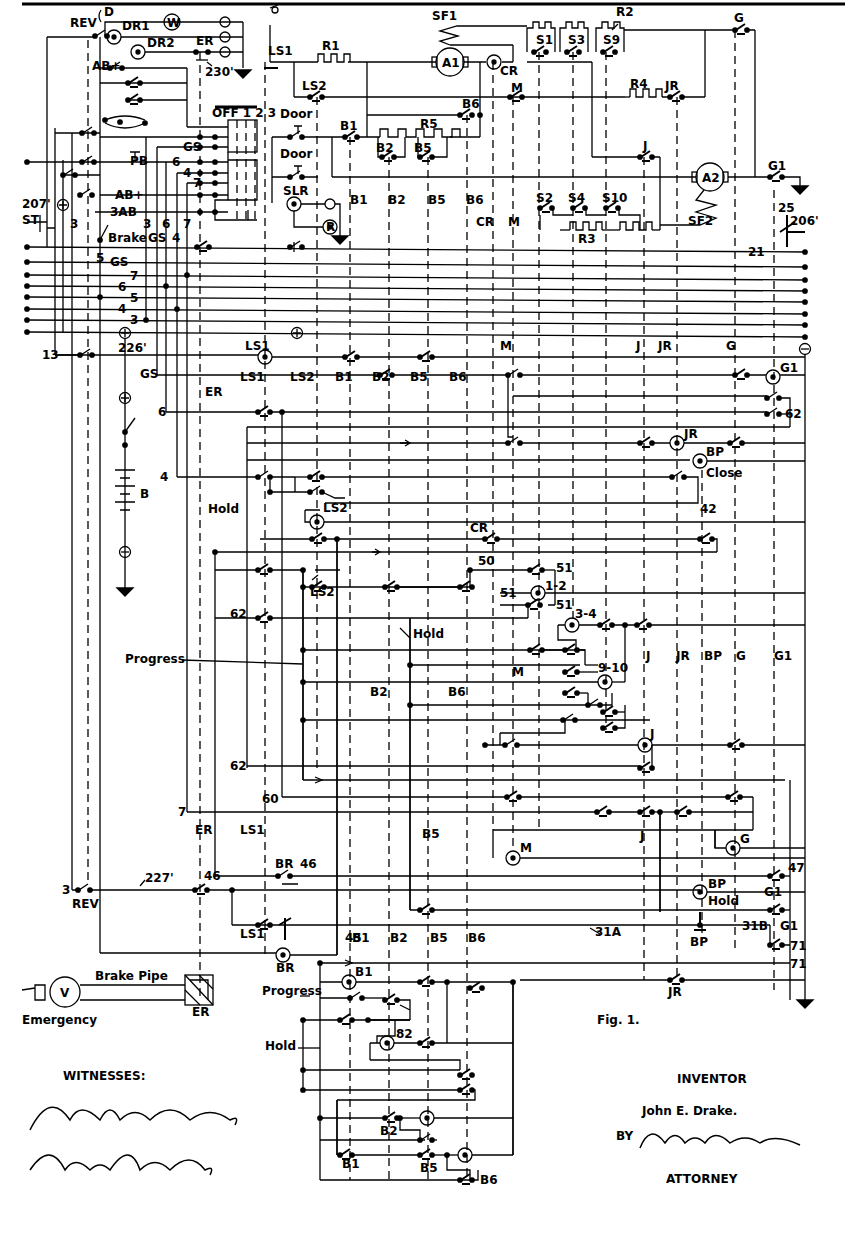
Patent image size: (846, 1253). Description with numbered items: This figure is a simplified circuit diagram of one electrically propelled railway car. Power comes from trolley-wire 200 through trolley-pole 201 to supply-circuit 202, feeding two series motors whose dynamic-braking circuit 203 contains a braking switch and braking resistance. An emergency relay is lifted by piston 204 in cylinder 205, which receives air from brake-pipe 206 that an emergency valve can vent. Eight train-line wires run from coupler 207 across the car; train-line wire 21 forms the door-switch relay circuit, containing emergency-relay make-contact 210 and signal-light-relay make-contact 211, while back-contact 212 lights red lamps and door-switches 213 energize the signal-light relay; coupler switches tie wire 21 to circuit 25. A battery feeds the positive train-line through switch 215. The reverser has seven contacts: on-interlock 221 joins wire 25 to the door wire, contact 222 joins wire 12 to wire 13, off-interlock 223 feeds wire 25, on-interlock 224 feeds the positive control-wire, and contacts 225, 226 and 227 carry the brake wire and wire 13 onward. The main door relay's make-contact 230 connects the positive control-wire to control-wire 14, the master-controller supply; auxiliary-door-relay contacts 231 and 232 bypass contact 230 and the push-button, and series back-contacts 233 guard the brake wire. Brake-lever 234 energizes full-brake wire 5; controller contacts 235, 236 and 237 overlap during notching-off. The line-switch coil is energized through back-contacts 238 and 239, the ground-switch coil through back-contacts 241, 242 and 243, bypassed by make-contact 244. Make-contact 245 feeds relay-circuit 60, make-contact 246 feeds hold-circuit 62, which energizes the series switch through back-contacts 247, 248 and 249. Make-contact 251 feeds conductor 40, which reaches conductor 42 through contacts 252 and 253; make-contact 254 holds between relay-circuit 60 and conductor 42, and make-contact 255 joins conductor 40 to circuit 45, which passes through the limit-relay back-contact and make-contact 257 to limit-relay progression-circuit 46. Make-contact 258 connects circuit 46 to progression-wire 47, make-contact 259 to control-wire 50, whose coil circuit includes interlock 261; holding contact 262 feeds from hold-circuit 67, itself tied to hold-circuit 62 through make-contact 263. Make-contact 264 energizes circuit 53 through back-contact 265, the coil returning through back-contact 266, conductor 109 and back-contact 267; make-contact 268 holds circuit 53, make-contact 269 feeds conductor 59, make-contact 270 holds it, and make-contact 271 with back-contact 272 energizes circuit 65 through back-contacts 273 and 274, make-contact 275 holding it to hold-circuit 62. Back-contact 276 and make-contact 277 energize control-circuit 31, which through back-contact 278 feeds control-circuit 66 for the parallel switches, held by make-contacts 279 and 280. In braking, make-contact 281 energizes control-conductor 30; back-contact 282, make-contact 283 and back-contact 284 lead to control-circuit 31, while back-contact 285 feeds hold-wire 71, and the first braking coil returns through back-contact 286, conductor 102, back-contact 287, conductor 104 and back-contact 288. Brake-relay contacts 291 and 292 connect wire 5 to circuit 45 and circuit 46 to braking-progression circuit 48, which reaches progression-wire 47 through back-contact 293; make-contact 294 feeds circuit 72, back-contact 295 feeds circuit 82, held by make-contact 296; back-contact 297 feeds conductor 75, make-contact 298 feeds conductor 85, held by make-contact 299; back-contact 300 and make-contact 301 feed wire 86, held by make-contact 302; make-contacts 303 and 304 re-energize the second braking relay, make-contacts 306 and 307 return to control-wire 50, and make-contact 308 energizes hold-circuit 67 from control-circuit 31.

The trolley-wire 200 is at (370, 5).
The trolley-pole 201 is at (288, 13).
The supply-circuit line 202 is at (288, 43).
The dynamic-braking circuit 203 is at (450, 172).
The piston 204 is at (192, 972).
The cylinder 205 is at (210, 972).
The brake-pipe 206 is at (128, 1002).
The coupler 207 is at (416, 342).
The make-contact of emergency-relay ER 210 is at (205, 255).
The make-contact of signal-light relay SLR 211 is at (288, 239).
The back-contact of signal-light relay SLR 212 is at (309, 240).
The door-switches 213 is at (312, 122).
The battery switch 215 is at (140, 432).
The reverser-on interlock contact 221 is at (92, 38).
The second reverser-contact 222 is at (82, 128).
The third reverser-contact 223 is at (100, 152).
The fourth reverser-contact 224 is at (95, 172).
The fifth reverser-contact 225 is at (90, 192).
The sixth reverser-contact 226 is at (80, 358).
The seventh reverser-contact 227 is at (88, 884).
The make-contact of main door-relay DR1 230 is at (140, 58).
The first make-contact of auxiliary door-relay DR2 231 is at (146, 82).
The second make-contact of auxiliary door-relay DR2 232 is at (146, 99).
The back-contact of door-relays DR1 and DR2 233 is at (105, 118).
The brake-lever 234 is at (115, 229).
The braking-circuit off-position contact 235 is at (232, 220).
The motoring-circuit on-position contact 236 is at (252, 225).
The motoring-circuit on-position contact 237 is at (215, 100).
The back-contact of braking-switch B1 238 is at (352, 350).
The back-contact of braking-switch B5 239 is at (427, 350).
The back-contact of braking-switch B2 241 is at (388, 368).
The back-contact of switch M 242 is at (520, 370).
The back-contact of switch G 243 is at (728, 368).
The make-contact of ground-switch G1 244 is at (765, 409).
The LS1 make-contact 245 is at (262, 405).
The G1 make-contact 246 is at (765, 417).
The back-contact of switch M 247 is at (516, 450).
The back-contact of switch J 248 is at (640, 448).
The back-contact of switch G 249 is at (740, 450).
The LS1 make-contact 251 is at (256, 480).
The LS2 back-contact 252 is at (318, 470).
The JR make-contact 253 is at (511, 487).
The LS2 make-contact 254 is at (336, 497).
The LS2 make-contact 255 is at (310, 541).
The BP make-contact 257 is at (713, 532).
The LS1 make-contact 258 is at (256, 573).
The LS2 make-contact 259 is at (323, 592).
The back-contact of switch 1-2 261 is at (528, 576).
The holding-circuit make-contact of switch 1-2 262 is at (528, 610).
The LS1 make-contact 263 is at (256, 622).
The make-contact of switch 1-2 264 is at (537, 644).
The back-contact of switch 3-4 265 is at (565, 655).
The back-contact of switch 9-10 266 is at (606, 618).
The J-switch back-contact 267 is at (645, 618).
The make-contact of switch 3-4 268 is at (568, 672).
The make-contact of switch 3-4 269 is at (563, 693).
The make-contact of switch 9-10 270 is at (622, 713).
The make-contact of switch 9-10 271 is at (600, 721).
The back-contact of switch 3-4 272 is at (556, 713).
The M back-contact 273 is at (515, 752).
The G back-contact 274 is at (738, 752).
The J make-contact 275 is at (652, 756).
The back-contact of switch 9-10 276 is at (598, 818).
The make-contact of transition-switch J 277 is at (640, 818).
The JR back-contact 278 is at (714, 817).
The M make-contact 279 is at (517, 785).
The G make-contact 280 is at (730, 790).
The emergency-relay make-contact 281 is at (194, 896).
The LS1 back-contact 282 is at (266, 912).
The BP make-contact 283 is at (690, 920).
The G1 back-contact 284 is at (770, 904).
The G1 back-contact 285 is at (768, 950).
The B5 back-contact 286 is at (420, 975).
The B5 back-contact 287 is at (432, 1048).
The JR back-contact 288 is at (668, 974).
The BR make-contact 291 is at (296, 920).
The BR make-contact 292 is at (290, 884).
The G1 back-contact 293 is at (770, 882).
The B1 make-contact 294 is at (340, 1026).
The B2 back-contact 295 is at (416, 1008).
The B2 make-contact 296 is at (355, 993).
The B6 back-contact 297 is at (478, 1080).
The B2 make-contact 298 is at (392, 1111).
The B5 make-contact 299 is at (432, 1134).
The B1 back-contact 300 is at (352, 1150).
The B5 make-contact 301 is at (418, 1160).
The B6 make-contact 302 is at (458, 1184).
The B6 make-contact 303 is at (460, 1080).
The B6 make-contact 304 is at (478, 992).
The B2 make-contact 306 is at (385, 592).
The B6 make-contact 307 is at (464, 594).
The B5 make-contact 308 is at (432, 903).
The train-line wire 5 is at (183, 955).
The wire 12 is at (164, 137).
The wire 13 is at (71, 238).
The control-wire 14 is at (204, 114).
The train-line wire 21 is at (416, 247).
The circuit 25 is at (52, 95).
The control-conductor 30 is at (229, 904).
The control-circuit 31 is at (519, 861).
The conductor 40 is at (298, 469).
The conductor 42 is at (320, 484).
The circuit 45 is at (340, 739).
The limit-relay progression-circuit 46 is at (467, 551).
The progression-wire 47 is at (536, 670).
The braking-progression circuit 48 is at (374, 1055).
The control-wire 50 is at (284, 495).
The circuit 53 is at (595, 655).
The conductor 59 is at (605, 698).
The relay-circuit 60 is at (288, 404).
The hold-circuit 62 is at (510, 443).
The circuit 65 is at (560, 733).
The control-circuit 66 is at (619, 835).
The hold-circuit 67 is at (496, 759).
The braking-operation hold-wire 71 is at (548, 1071).
The circuit 72 is at (421, 1037).
The conductor 75 is at (398, 1124).
The circuit 82 is at (399, 1011).
The conductor 85 is at (423, 1120).
The wire 86 is at (470, 1159).
The conductor 102 is at (434, 1010).
The conductor 104 is at (520, 1064).
The control-circuit conductor 109 is at (632, 645).